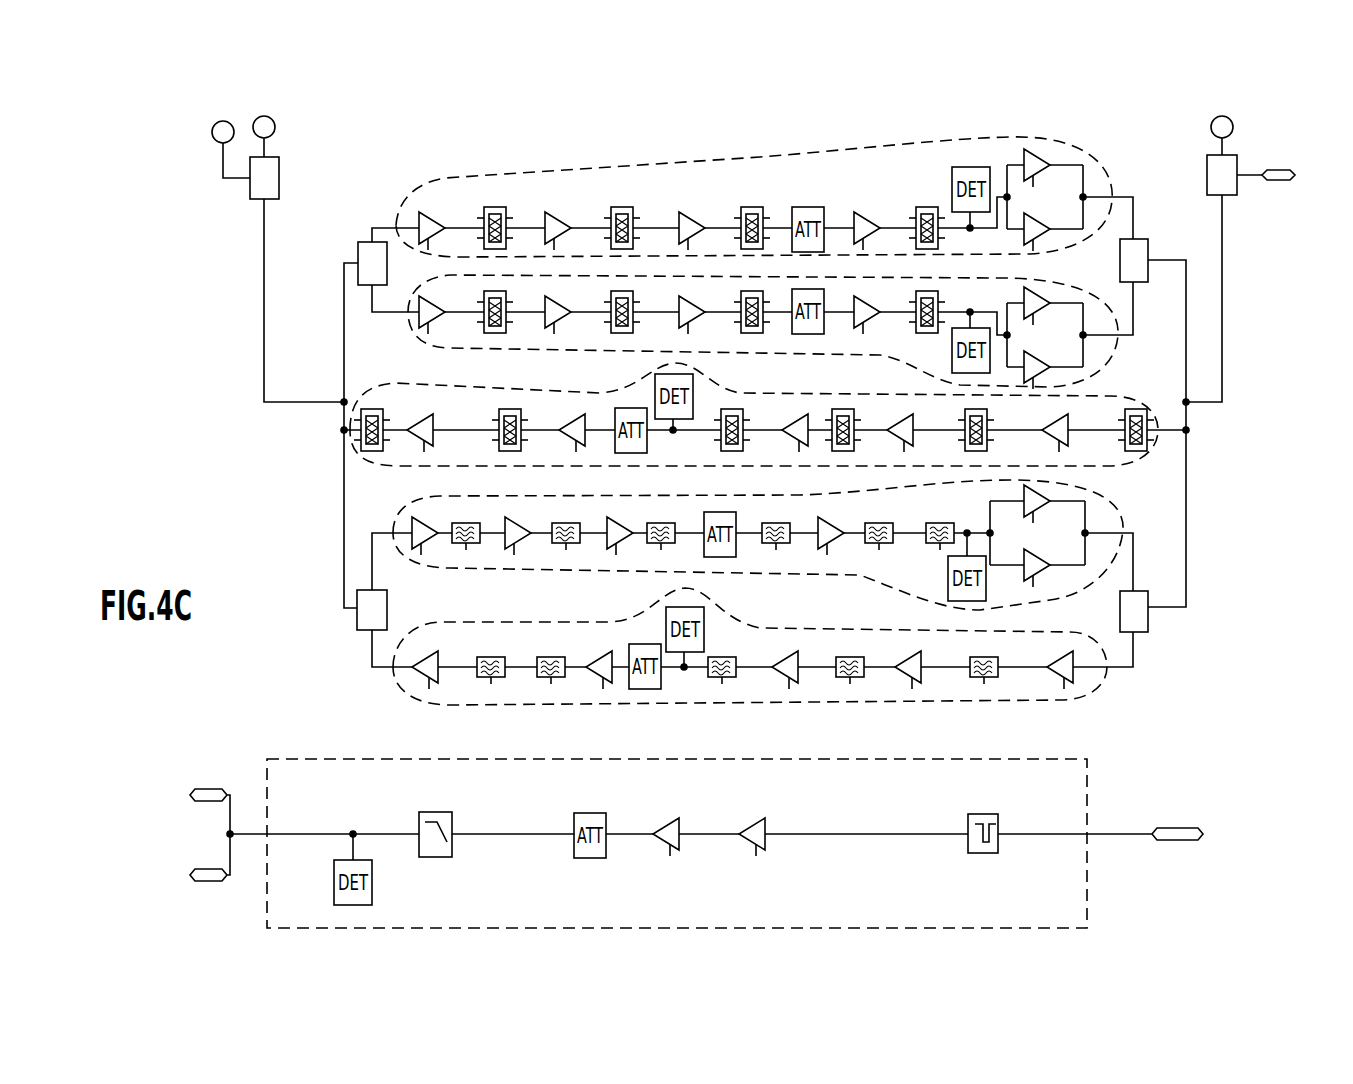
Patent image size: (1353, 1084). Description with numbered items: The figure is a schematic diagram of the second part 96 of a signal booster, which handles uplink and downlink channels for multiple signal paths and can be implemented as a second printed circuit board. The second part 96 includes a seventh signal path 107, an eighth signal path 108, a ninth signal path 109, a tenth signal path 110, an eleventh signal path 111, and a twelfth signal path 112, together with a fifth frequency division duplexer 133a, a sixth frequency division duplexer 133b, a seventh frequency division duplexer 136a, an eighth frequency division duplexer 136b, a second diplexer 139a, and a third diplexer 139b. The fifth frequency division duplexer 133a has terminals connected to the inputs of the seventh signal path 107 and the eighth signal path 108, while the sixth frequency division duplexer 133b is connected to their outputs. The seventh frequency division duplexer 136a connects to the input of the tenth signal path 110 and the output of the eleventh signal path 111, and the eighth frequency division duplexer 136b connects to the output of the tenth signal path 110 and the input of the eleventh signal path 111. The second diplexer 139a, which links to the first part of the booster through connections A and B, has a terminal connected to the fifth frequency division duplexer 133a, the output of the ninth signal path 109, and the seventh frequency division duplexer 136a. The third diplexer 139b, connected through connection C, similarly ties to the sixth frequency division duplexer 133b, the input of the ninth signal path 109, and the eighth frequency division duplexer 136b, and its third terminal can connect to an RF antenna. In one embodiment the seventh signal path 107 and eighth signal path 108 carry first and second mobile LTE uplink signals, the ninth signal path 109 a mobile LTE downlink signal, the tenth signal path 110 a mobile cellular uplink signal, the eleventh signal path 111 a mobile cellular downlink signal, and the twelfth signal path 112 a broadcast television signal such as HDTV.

The second part of the signal booster 96 is at (188, 110).
The second diplexer 139a is at (252, 202).
The third diplexer 139b is at (1228, 197).
The fifth frequency division duplexer 133a is at (365, 240).
The sixth frequency division duplexer 133b is at (1140, 240).
The seventh frequency division duplexer 136a is at (356, 625).
The eighth frequency division duplexer 136b is at (1148, 633).
The seventh signal path 107 is at (1075, 140).
The eighth signal path 108 is at (440, 345).
The ninth signal path 109 is at (410, 470).
The tenth signal path 110 is at (1105, 490).
The eleventh signal path 111 is at (1073, 700).
The twelfth signal path 112 is at (1090, 790).